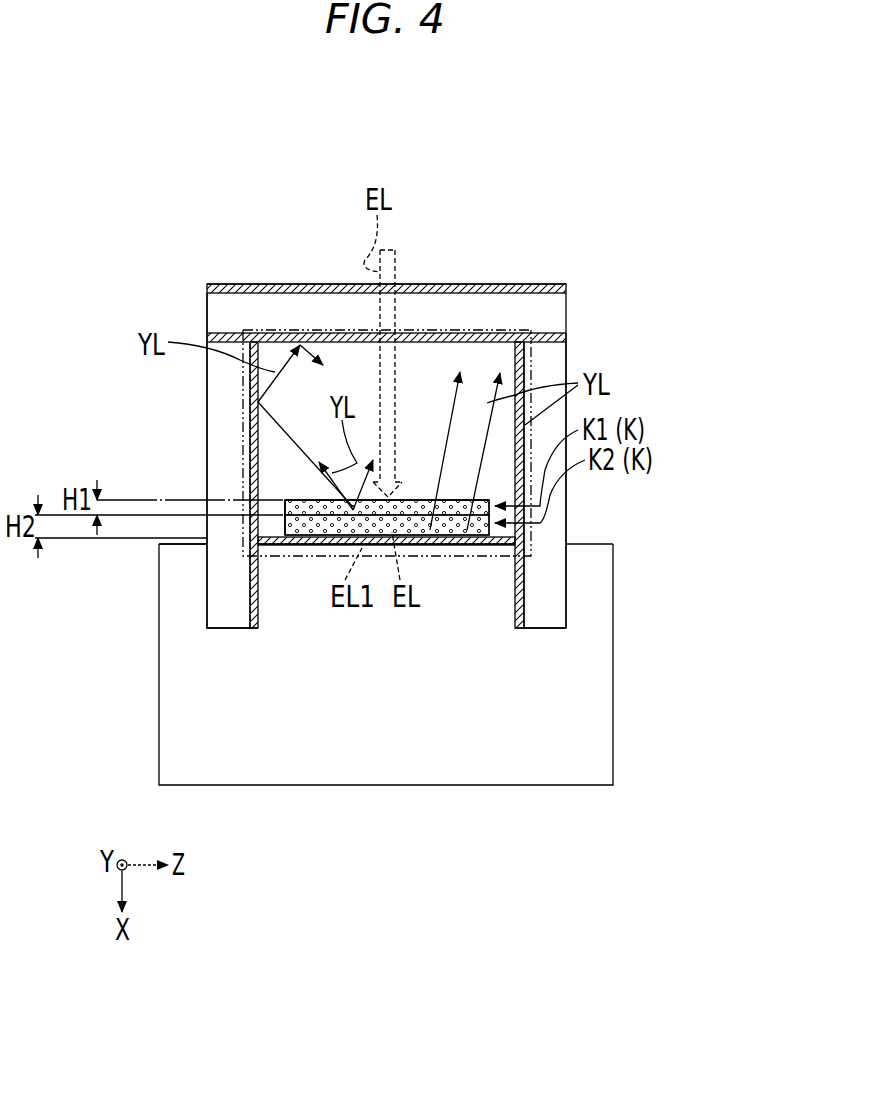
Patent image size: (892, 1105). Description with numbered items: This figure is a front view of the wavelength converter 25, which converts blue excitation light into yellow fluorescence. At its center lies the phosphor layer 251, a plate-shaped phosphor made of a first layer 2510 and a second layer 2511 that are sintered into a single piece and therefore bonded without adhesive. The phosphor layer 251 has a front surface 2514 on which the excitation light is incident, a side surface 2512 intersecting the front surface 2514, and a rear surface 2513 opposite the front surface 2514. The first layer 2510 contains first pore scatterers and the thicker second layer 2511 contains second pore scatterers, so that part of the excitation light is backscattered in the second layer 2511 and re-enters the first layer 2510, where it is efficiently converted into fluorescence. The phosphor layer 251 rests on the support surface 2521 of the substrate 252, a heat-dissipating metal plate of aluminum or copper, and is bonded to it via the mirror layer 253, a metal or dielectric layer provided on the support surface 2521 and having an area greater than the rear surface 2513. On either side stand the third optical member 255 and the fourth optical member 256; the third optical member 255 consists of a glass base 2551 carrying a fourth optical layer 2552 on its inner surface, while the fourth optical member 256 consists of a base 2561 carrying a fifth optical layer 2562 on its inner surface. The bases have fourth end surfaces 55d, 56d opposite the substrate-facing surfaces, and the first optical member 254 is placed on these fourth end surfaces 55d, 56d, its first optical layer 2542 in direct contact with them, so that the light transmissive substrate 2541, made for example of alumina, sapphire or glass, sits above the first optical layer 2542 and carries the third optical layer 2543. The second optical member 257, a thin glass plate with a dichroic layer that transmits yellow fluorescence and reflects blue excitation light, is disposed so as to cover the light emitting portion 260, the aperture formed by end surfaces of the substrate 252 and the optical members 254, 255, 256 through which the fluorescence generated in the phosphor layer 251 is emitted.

The wavelength converter 25 is at (662, 240).
The phosphor layer 251 is at (690, 475).
The first layer 2510 is at (467, 503).
The second layer 2511 is at (467, 525).
The side surface 2512 is at (283, 527).
The rear surface 2513 is at (432, 545).
The front surface 2514 is at (297, 498).
The substrate 252 is at (600, 765).
The support surface 2521 is at (188, 544).
The mirror layer 253 is at (467, 545).
The first optical member 254 is at (340, 165).
The light transmissive substrate 2541 is at (248, 305).
The first optical layer 2542 is at (237, 338).
The third optical layer 2543 is at (277, 284).
The third optical member 255 is at (710, 607).
The base 2551 is at (560, 607).
The fourth optical layer 2552 is at (513, 612).
The fourth optical member 256 is at (95, 365).
The base 2561 is at (220, 422).
The fifth optical layer 2562 is at (252, 385).
The second optical member 257 is at (560, 355).
The light emitting portion 260 is at (428, 345).
The fourth end surface 55d is at (553, 338).
The fourth end surface 56d is at (217, 333).